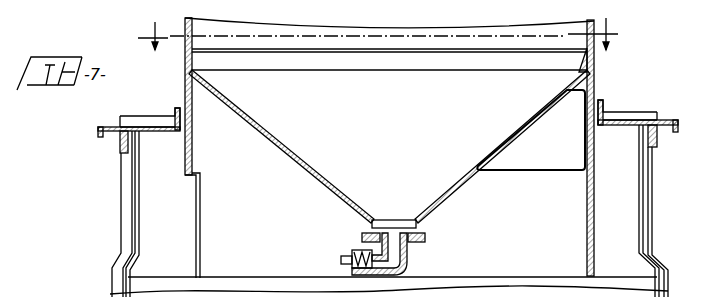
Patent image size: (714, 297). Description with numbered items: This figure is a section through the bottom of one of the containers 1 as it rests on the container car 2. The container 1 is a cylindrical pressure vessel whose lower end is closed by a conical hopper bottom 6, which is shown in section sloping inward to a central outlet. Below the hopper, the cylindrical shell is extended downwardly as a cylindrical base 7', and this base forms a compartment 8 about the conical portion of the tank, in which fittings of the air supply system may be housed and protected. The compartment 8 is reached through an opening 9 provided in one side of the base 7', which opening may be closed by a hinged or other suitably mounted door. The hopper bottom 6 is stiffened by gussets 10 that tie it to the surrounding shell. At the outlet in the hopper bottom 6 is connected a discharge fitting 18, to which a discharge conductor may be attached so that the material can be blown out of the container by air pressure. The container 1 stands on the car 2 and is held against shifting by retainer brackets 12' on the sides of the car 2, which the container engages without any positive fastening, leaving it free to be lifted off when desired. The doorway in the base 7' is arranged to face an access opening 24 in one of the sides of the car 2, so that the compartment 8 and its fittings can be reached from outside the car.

The container 1 is at (594, 75).
The container car 2 is at (148, 150).
The hopper bottom 6 is at (308, 175).
The cylindrical base 7' is at (602, 148).
The compartment 8 is at (376, 136).
The opening 9 is at (196, 197).
The gussets 10 is at (535, 160).
The retainer brackets 12' is at (388, 116).
The discharge fitting 18 is at (367, 246).
The access opening 24 is at (133, 233).